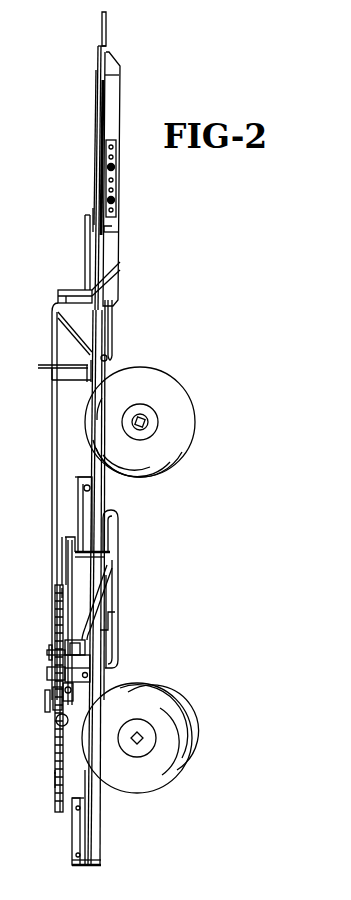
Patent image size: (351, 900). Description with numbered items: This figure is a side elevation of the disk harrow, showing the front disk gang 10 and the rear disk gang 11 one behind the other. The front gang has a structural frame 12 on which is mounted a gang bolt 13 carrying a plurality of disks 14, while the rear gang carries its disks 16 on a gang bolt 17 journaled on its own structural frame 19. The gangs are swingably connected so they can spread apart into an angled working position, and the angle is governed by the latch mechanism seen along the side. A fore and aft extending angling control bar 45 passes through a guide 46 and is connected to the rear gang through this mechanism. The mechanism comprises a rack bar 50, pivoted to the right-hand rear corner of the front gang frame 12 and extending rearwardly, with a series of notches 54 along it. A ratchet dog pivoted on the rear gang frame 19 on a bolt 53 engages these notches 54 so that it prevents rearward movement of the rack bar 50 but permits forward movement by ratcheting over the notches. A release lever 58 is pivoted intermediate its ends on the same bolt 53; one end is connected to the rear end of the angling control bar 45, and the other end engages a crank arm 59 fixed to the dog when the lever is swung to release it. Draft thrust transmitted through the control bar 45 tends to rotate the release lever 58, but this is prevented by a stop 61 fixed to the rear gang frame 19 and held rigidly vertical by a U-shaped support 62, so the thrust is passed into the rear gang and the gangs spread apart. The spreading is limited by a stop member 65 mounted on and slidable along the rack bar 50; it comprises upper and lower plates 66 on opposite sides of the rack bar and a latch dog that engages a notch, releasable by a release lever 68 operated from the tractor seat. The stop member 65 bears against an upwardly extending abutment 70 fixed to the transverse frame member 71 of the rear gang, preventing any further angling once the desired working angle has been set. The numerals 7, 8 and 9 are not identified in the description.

The bracket 7 is at (46, 545).
The member 8 is at (27, 781).
The member 9 is at (31, 576).
The front disk gang 10 is at (173, 414).
The rear disk gang 11 is at (176, 740).
The structural frame 12 is at (101, 372).
The gang bolt 13 is at (143, 423).
The disks 14 is at (160, 381).
The disks 16 is at (140, 740).
The gang bolt 17 is at (135, 743).
The structural frame 19 is at (97, 838).
The angling control bar 45 is at (53, 333).
The guide 46 is at (55, 373).
The rack bar 50 is at (55, 798).
The bolt 53 is at (45, 672).
The notches 54 is at (55, 787).
The release lever 58 is at (47, 652).
The crank arm 59 is at (47, 673).
The stop 61 is at (50, 637).
The U-shaped support 62 is at (78, 640).
The stop member 65 is at (77, 698).
The upper and lower plates 66 is at (58, 722).
The release lever 68 is at (53, 693).
The abutment 70 is at (118, 684).
The transverse frame member 71 is at (108, 678).